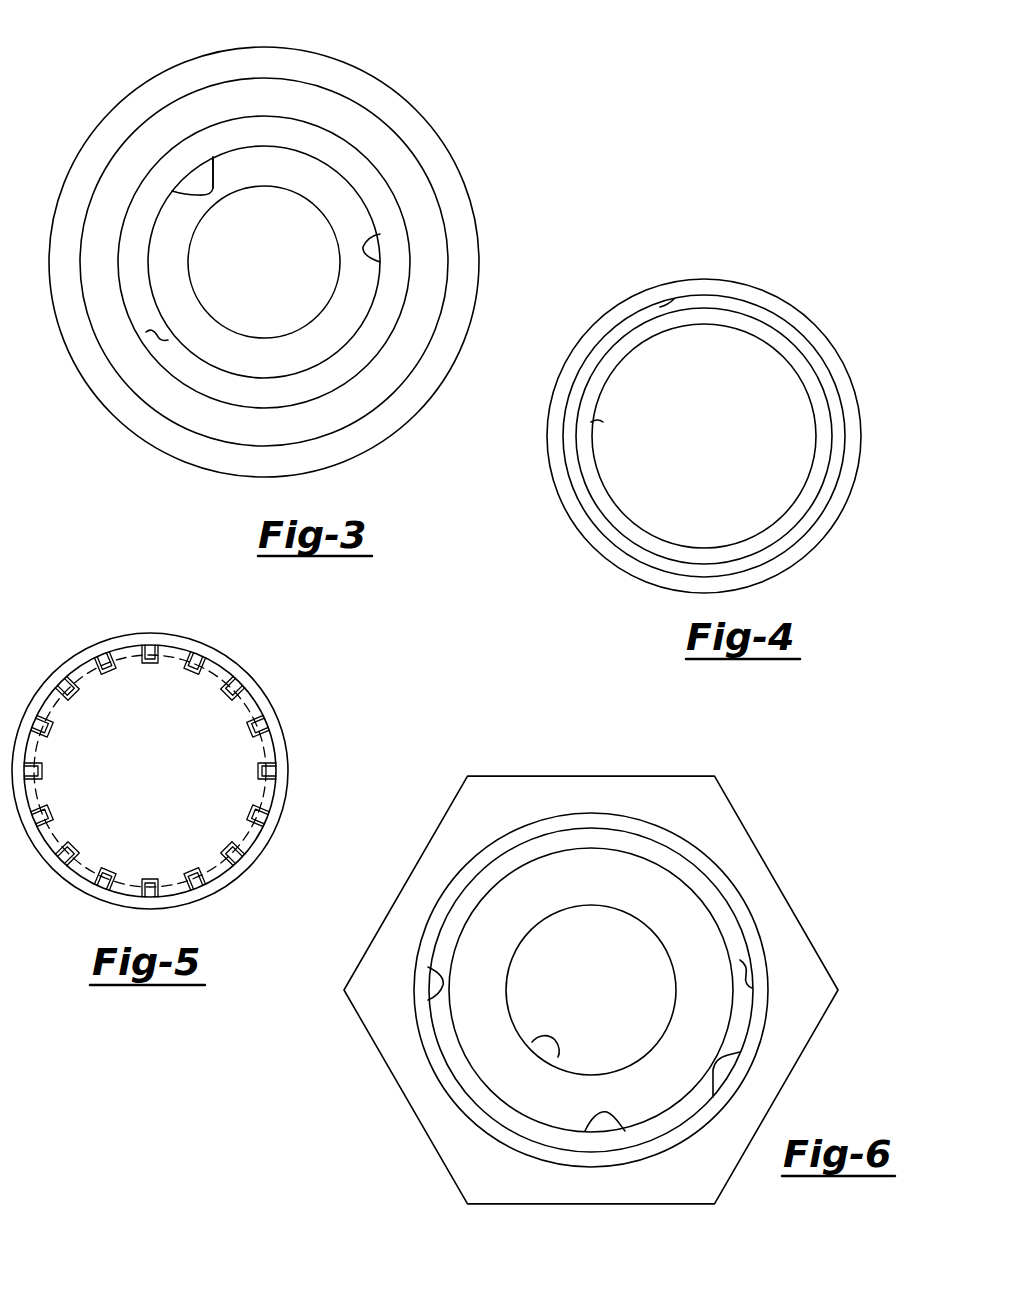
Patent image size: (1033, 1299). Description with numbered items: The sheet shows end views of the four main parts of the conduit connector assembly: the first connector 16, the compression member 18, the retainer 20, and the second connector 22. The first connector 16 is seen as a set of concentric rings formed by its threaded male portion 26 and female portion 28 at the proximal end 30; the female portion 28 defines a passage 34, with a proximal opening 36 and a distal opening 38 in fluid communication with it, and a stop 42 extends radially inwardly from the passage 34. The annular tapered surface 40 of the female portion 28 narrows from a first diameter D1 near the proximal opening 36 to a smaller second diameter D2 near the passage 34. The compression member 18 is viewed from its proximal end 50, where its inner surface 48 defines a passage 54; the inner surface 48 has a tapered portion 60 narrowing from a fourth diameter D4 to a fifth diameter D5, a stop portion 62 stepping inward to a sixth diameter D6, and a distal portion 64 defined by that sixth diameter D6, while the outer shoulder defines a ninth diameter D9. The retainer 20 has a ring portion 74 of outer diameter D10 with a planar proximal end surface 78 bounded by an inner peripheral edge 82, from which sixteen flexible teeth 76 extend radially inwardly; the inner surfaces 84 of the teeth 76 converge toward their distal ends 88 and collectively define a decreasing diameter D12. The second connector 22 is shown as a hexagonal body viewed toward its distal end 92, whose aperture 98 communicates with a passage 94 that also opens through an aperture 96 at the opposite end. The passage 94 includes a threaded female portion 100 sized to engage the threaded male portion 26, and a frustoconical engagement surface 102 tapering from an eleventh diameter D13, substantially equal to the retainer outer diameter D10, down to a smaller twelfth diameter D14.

In FIG. 3, the first connector 16 is at (442, 106).
In FIG. 4, the compression member 18 is at (792, 288).
In FIG. 5, the retainer 20 is at (250, 659).
In FIG. 6, the second connector 22 is at (738, 789).
In FIG. 3, the threaded male portion 26 is at (105, 115).
In FIG. 3, the female portion 28 is at (205, 195).
In FIG. 3, the proximal end 30 is at (422, 200).
In FIG. 3, the passage 34 is at (380, 262).
In FIG. 3, the proximal opening 36 is at (197, 390).
In FIG. 3, the distal opening 38 is at (197, 253).
In FIG. 3, the tapered surface 40 is at (150, 343).
In FIG. 3, the stop 42 is at (233, 173).
In FIG. 3, the first diameter D1 is at (308, 125).
In FIG. 3, the second diameter D2 is at (168, 332).
In FIG. 4, the inner surface 48 is at (690, 325).
In FIG. 4, the proximal end 50 is at (703, 290).
In FIG. 4, the passage 54 is at (746, 394).
In FIG. 4, the tapered portion 60 is at (674, 304).
In FIG. 4, the stop portion 62 is at (733, 322).
In FIG. 4, the distal portion 64 is at (596, 420).
In FIG. 4, the fourth diameter D4 is at (580, 508).
In FIG. 4, the fifth diameter D5 is at (600, 540).
In FIG. 4, the sixth diameter D6 is at (628, 522).
In FIG. 4, the ninth diameter D9 is at (548, 413).
In FIG. 5, the ring portion 74 is at (62, 665).
In FIG. 5, the teeth 76 is at (262, 746).
In FIG. 5, the proximal end surface 78 is at (263, 696).
In FIG. 5, the inner peripheral edge 82 is at (130, 655).
In FIG. 5, the inner surface 84 is at (152, 652).
In FIG. 5, the distal end 88 is at (55, 812).
In FIG. 5, the outer diameter D10 is at (290, 780).
In FIG. 5, the diameter D12 is at (152, 880).
In FIG. 6, the distal end 92 is at (375, 1010).
In FIG. 6, the passage 94 is at (686, 920).
In FIG. 6, the aperture 96 is at (607, 905).
In FIG. 6, the aperture 98 is at (430, 985).
In FIG. 6, the threaded female portion 100 is at (738, 1053).
In FIG. 6, the engagement surface 102 is at (750, 985).
In FIG. 6, the eleventh diameter D13 is at (625, 1131).
In FIG. 6, the twelfth diameter D14 is at (558, 1057).